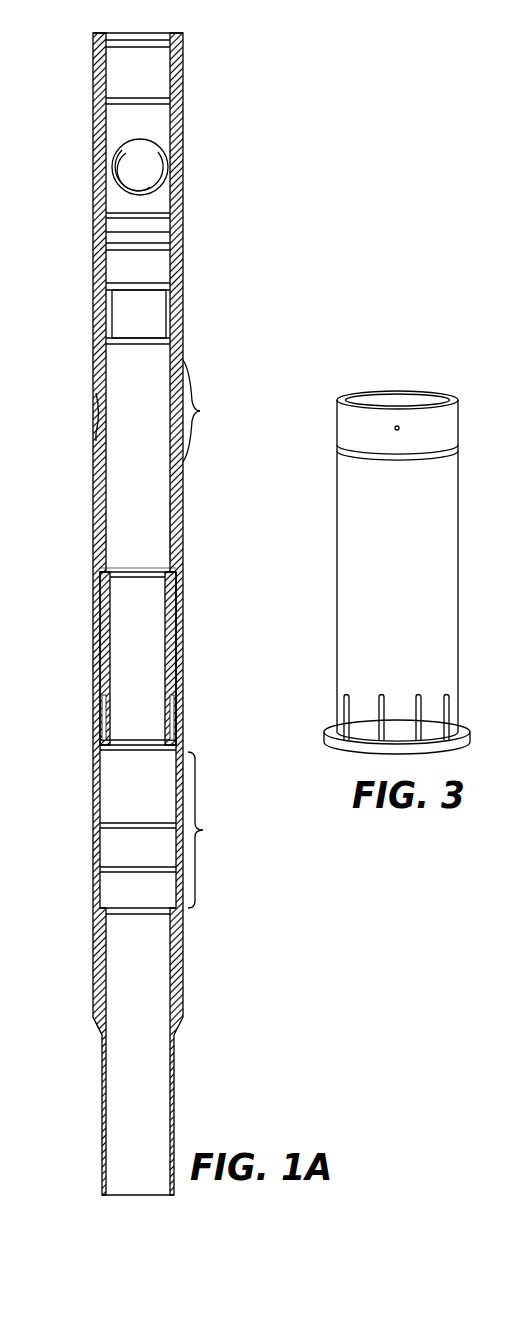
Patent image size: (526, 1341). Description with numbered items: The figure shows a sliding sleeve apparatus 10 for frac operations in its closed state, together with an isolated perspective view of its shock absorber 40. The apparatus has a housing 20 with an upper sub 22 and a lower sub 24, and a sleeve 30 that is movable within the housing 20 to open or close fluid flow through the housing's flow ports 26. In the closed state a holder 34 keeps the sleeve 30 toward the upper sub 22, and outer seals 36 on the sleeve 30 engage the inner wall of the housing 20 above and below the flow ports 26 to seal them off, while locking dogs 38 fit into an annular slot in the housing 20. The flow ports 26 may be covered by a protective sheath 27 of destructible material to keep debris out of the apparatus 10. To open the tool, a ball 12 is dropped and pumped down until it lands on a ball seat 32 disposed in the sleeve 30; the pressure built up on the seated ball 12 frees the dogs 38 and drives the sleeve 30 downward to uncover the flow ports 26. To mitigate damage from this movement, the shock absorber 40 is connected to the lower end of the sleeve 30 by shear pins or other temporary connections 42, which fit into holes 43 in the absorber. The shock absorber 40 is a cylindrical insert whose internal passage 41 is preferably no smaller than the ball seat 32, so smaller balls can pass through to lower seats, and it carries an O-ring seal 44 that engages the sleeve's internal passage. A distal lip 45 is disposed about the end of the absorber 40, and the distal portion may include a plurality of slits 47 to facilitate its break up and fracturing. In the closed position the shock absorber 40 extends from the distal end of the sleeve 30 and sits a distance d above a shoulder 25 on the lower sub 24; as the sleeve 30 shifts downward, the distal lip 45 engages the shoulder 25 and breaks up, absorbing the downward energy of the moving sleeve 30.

In FIG. 1A, the sliding sleeve apparatus 10 is at (62, 74).
In FIG. 1A, the ball 12 is at (172, 156).
In FIG. 1A, the housing 20 is at (93, 528).
In FIG. 1A, the upper sub 22 is at (93, 131).
In FIG. 1A, the lower sub 24 is at (93, 994).
In FIG. 1A, the shoulder 25 is at (102, 910).
In FIG. 1A, the flow ports 26 is at (97, 398).
In FIG. 1A, the protective sheath 27 is at (95, 442).
In FIG. 1A, the sleeve 30 is at (161, 527).
In FIG. 1A, the ball seat 32 is at (116, 312).
In FIG. 1A, the holder 34 is at (110, 232).
In FIG. 1A, the outer seals 36 is at (209, 411).
In FIG. 1A, the locking dogs 38 is at (183, 621).
In FIG. 1A, the shock absorber 40 is at (120, 663).
In FIG. 3, the shock absorber 40 is at (337, 527).
In FIG. 3, the internal passage 41 is at (430, 394).
In FIG. 1A, the shear pins 42 is at (107, 590).
In FIG. 3, the holes 43 is at (337, 420).
In FIG. 1A, the O-ring seal 44 is at (104, 712).
In FIG. 3, the O-ring seal 44 is at (460, 446).
In FIG. 1A, the distal lip 45 is at (107, 752).
In FIG. 3, the distal lip 45 is at (325, 735).
In FIG. 3, the slits 47 is at (450, 712).
In FIG. 1A, the distance d is at (163, 830).